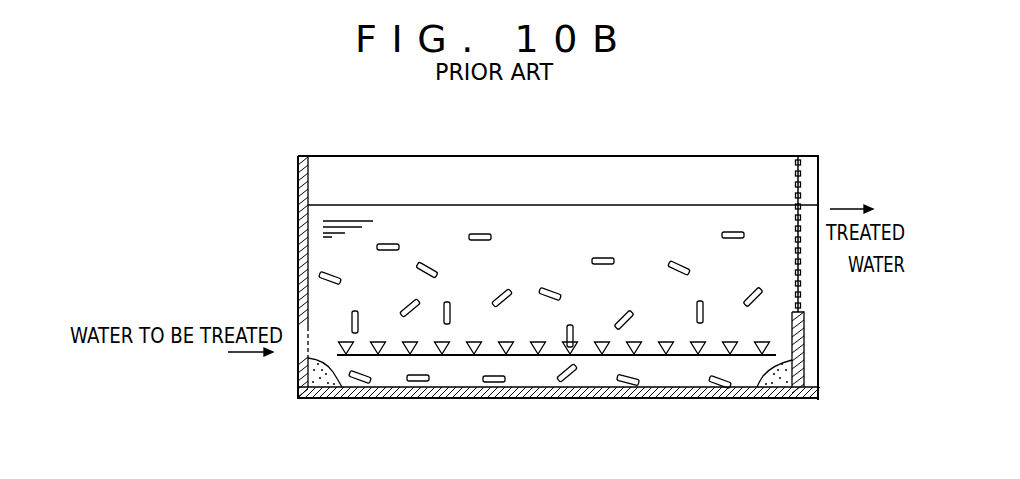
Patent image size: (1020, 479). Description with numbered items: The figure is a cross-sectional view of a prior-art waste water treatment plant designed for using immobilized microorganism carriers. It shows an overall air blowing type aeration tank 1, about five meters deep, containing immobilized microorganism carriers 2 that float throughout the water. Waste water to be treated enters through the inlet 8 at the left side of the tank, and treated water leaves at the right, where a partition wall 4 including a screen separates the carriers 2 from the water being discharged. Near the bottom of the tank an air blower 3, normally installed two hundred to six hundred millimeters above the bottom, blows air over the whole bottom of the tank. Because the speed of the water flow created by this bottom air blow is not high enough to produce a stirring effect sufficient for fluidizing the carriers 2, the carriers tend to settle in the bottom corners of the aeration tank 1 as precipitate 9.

The aeration tank 1 is at (298, 317).
The immobilized microorganism carriers 2 is at (480, 234).
The air blower 3 is at (348, 337).
The partition wall 4 is at (800, 203).
The inlet 8 is at (298, 356).
The precipitate 9 is at (313, 388).